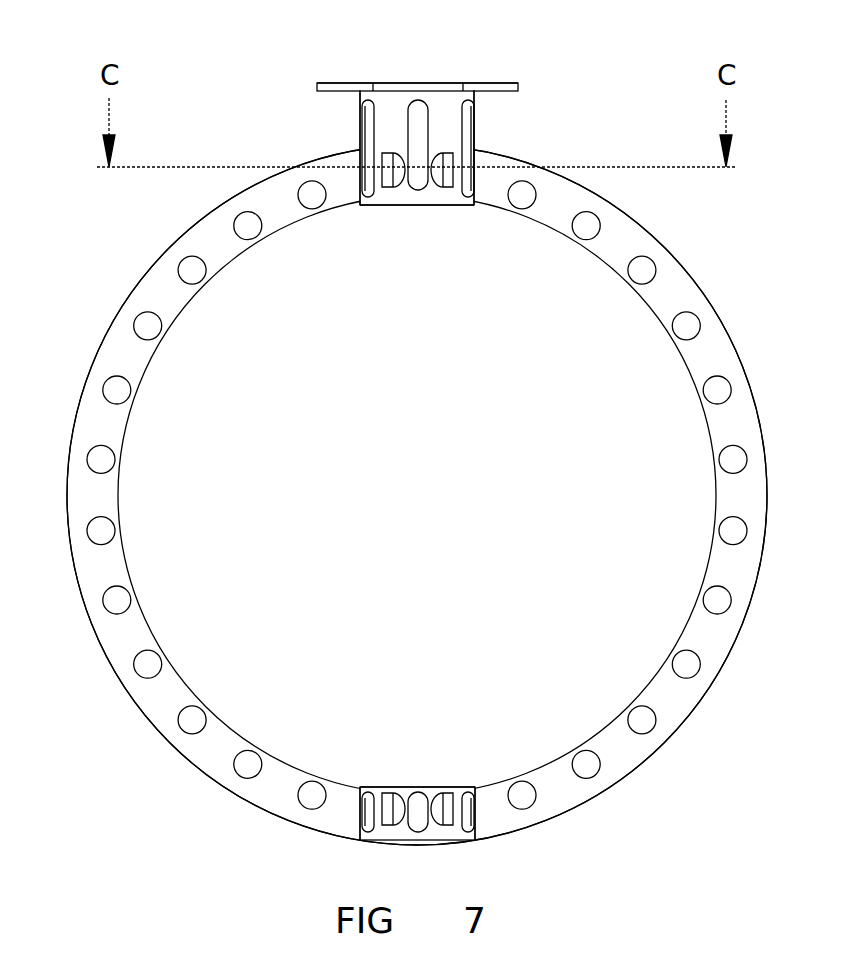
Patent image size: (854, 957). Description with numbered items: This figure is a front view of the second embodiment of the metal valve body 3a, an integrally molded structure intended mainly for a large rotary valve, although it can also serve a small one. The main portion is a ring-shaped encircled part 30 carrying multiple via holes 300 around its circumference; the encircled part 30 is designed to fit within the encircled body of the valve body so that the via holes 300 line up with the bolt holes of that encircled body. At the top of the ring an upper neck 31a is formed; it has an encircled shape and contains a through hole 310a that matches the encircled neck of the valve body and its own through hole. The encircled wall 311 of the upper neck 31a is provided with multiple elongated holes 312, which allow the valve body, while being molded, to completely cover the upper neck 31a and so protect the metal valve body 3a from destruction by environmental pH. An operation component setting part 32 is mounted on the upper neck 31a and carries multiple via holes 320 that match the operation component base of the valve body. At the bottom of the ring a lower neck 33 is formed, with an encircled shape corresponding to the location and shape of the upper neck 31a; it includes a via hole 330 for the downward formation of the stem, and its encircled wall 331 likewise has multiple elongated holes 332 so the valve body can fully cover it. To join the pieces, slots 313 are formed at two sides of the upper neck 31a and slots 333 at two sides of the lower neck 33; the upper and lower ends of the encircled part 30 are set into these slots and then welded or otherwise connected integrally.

The metal valve body 3a is at (399, 495).
The encircled part 30 is at (163, 702).
The via holes 300 is at (117, 600).
The upper neck 31a is at (362, 127).
The encircled wall 311 is at (445, 128).
The elongated holes 312 is at (413, 197).
The slots 313 is at (358, 200).
The through hole 310a is at (437, 207).
The operation component setting part 32 is at (495, 82).
The via holes 320 is at (413, 82).
The lower neck 33 is at (475, 810).
The via hole 330 is at (430, 785).
The encircled wall 331 is at (373, 837).
The elongated holes 332 is at (412, 785).
The slots 333 is at (360, 785).